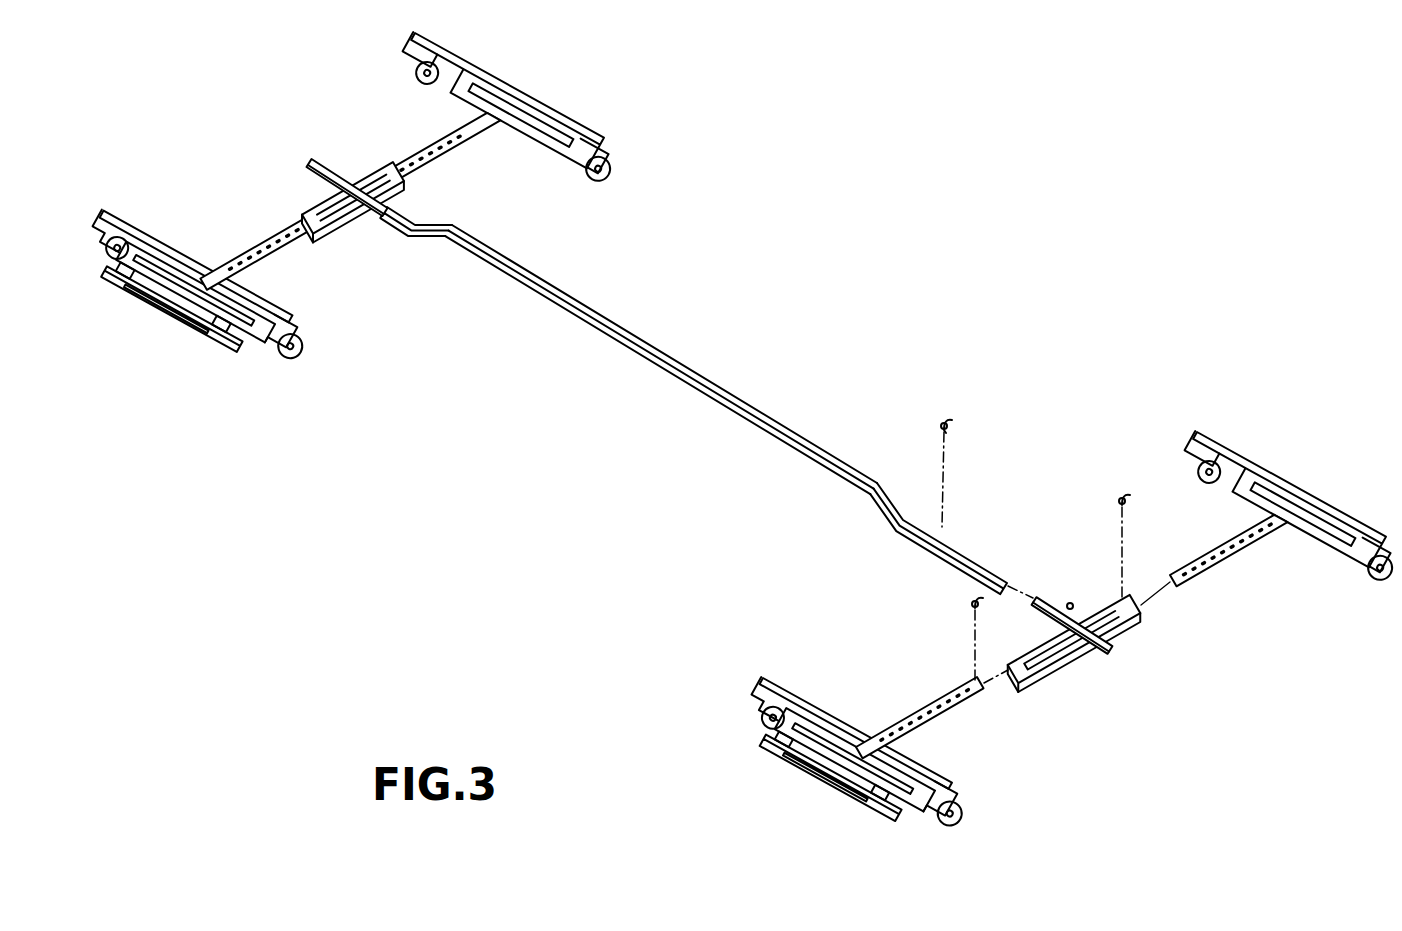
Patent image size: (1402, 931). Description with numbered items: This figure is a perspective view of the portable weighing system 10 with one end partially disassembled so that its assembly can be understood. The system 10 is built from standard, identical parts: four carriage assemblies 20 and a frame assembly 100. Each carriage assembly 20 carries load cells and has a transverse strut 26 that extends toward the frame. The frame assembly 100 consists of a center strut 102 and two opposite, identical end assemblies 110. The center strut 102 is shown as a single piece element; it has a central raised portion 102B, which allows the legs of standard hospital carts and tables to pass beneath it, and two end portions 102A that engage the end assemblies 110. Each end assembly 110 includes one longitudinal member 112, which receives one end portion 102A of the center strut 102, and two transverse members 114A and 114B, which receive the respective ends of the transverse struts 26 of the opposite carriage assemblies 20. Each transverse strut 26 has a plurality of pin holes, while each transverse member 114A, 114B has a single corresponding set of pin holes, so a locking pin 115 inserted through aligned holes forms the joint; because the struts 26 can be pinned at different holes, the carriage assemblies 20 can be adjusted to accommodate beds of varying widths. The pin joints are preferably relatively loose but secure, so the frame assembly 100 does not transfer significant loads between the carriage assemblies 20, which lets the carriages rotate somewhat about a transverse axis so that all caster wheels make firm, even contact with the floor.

The portable weighing system 10 is at (919, 136).
The carriage assembly 20 is at (557, 82).
The transverse strut 26 is at (936, 722).
The frame assembly 100 is at (676, 332).
The center strut 102 is at (571, 294).
The end portion 102A is at (396, 237).
The central raised portion 102B is at (756, 405).
The end assembly 110 is at (1071, 659).
The longitudinal member 112 is at (1068, 603).
The transverse member 114A is at (1058, 676).
The transverse member 114B is at (1097, 590).
The locking pin 115 is at (950, 436).